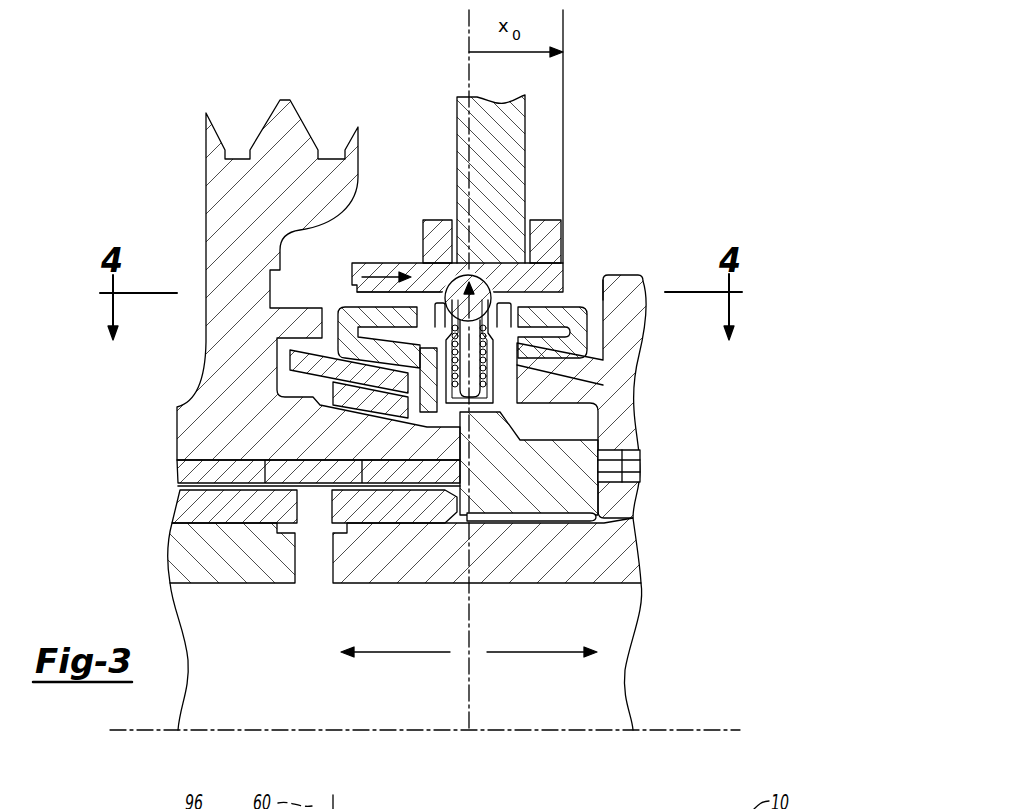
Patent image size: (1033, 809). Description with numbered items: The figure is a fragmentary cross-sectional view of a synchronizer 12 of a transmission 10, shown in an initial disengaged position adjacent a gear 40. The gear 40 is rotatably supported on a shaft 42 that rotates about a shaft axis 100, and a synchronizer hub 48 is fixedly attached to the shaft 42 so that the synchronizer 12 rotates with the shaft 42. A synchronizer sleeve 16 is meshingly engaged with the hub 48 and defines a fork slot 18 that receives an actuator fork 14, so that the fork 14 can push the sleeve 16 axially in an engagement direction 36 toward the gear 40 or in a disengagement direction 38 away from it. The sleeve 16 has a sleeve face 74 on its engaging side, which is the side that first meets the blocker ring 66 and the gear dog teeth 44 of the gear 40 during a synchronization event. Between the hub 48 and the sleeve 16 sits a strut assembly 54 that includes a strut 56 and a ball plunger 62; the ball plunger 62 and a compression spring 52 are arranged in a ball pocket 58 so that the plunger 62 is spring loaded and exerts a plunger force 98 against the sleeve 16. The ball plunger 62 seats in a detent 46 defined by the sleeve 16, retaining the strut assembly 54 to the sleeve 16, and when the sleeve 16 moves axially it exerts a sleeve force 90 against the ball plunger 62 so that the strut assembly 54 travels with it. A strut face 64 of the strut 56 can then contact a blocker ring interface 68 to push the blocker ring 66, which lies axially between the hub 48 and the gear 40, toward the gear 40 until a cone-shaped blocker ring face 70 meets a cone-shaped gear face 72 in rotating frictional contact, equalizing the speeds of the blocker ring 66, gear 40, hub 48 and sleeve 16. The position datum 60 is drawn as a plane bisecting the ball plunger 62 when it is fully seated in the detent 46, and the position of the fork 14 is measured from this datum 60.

The transmission 10 is at (694, 78).
The synchronizer 12 is at (598, 200).
The actuator fork 14 is at (457, 133).
The synchronizer sleeve 16 is at (358, 266).
The fork slot 18 is at (535, 222).
The engagement direction 36 is at (528, 653).
The disengagement direction 38 is at (413, 653).
The gear 40 is at (655, 388).
The shaft 42 is at (641, 612).
The gear dog teeth 44 is at (620, 275).
The detent 46 is at (477, 282).
The synchronizer hub 48 is at (612, 466).
The compression spring 52 is at (485, 386).
The strut assembly 54 is at (423, 274).
The strut 56 is at (360, 291).
The ball pocket 58 is at (452, 305).
The position datum 60 is at (469, 29).
The ball plunger 62 is at (486, 290).
The strut face 64 is at (518, 303).
The blocker ring 66 is at (350, 312).
The blocker ring interface 68 is at (525, 322).
The blocker ring face 70 is at (588, 355).
The gear face 72 is at (545, 362).
The sleeve face 74 is at (570, 268).
The sleeve force 90 is at (385, 277).
The plunger force 98 is at (481, 318).
The shaft axis 100 is at (718, 729).